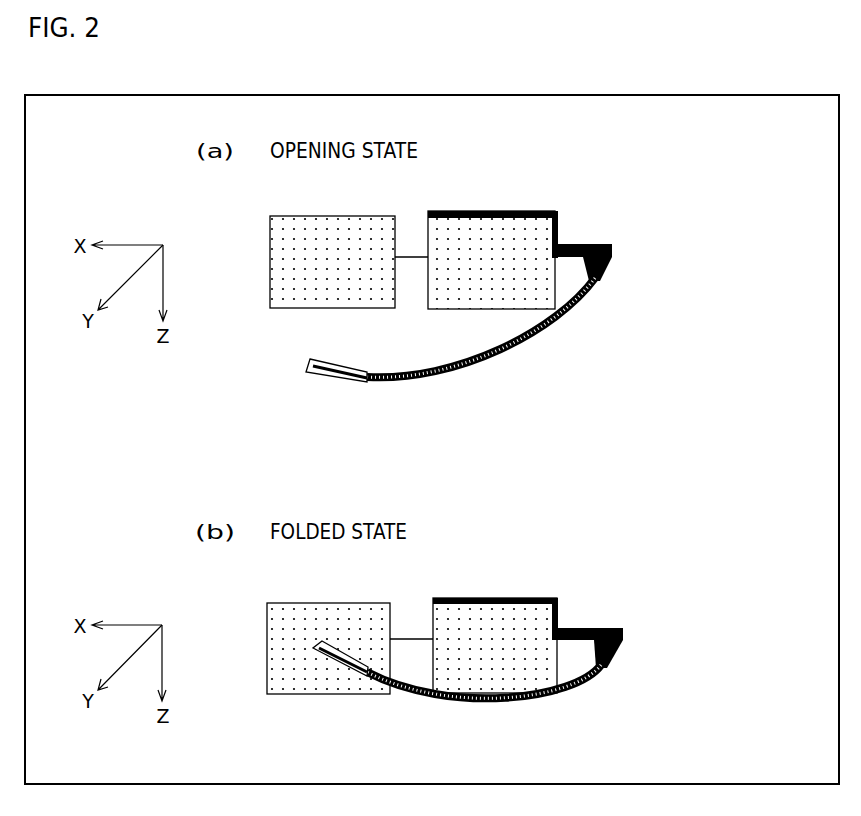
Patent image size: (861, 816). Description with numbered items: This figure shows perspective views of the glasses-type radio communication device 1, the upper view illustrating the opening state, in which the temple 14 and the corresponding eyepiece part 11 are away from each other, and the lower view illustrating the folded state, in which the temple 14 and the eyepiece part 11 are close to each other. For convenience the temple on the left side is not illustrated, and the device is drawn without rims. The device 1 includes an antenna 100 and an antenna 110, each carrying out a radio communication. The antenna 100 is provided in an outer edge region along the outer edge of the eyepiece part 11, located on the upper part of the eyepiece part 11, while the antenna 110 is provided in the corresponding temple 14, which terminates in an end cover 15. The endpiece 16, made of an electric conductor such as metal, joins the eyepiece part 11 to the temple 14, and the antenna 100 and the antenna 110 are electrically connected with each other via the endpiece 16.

The glasses-type radio communication device 1 is at (612, 181).
The eyepiece part 11 is at (334, 216).
The antenna 100 is at (492, 211).
The endpiece 16 is at (598, 243).
The temple 14 is at (447, 385).
The end cover 15 is at (330, 384).
The antenna 110 is at (527, 357).